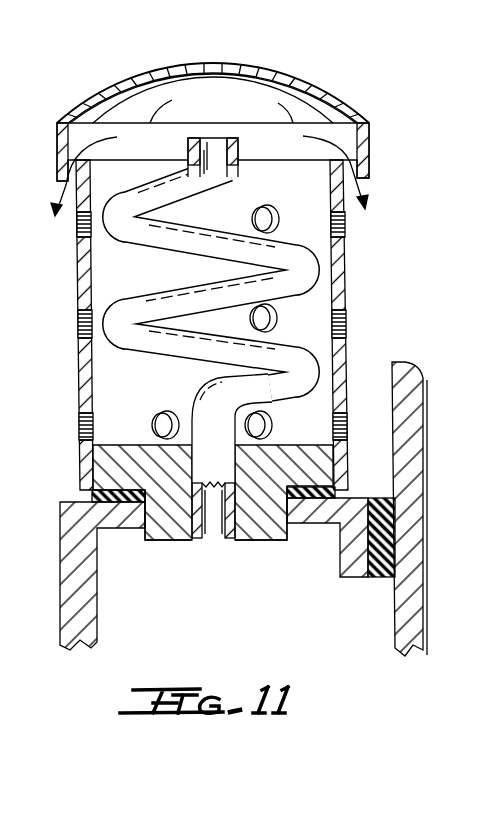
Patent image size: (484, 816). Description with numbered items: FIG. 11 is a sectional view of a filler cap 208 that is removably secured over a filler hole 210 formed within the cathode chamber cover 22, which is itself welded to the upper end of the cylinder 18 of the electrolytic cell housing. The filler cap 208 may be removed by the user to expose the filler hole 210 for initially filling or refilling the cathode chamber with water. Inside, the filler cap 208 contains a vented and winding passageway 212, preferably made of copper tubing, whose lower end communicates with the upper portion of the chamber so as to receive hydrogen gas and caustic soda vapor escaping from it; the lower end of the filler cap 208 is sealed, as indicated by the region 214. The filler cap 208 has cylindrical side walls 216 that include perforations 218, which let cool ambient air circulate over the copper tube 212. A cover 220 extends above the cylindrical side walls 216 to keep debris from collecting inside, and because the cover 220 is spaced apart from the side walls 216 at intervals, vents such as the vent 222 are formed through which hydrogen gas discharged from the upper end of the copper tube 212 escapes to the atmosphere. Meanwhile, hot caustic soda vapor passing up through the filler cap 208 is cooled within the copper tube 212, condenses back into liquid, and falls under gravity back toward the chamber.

The cover 220 is at (188, 64).
The vent 222 is at (60, 186).
The filler cap 208 is at (59, 283).
The cylindrical side walls 216 is at (347, 258).
The vented and winding passageway 212 is at (147, 303).
The perforations 218 is at (333, 327).
The cover 22 is at (70, 505).
The cylinder 18 is at (62, 574).
The filler hole 210 is at (144, 522).
The sealed region 214 is at (255, 517).